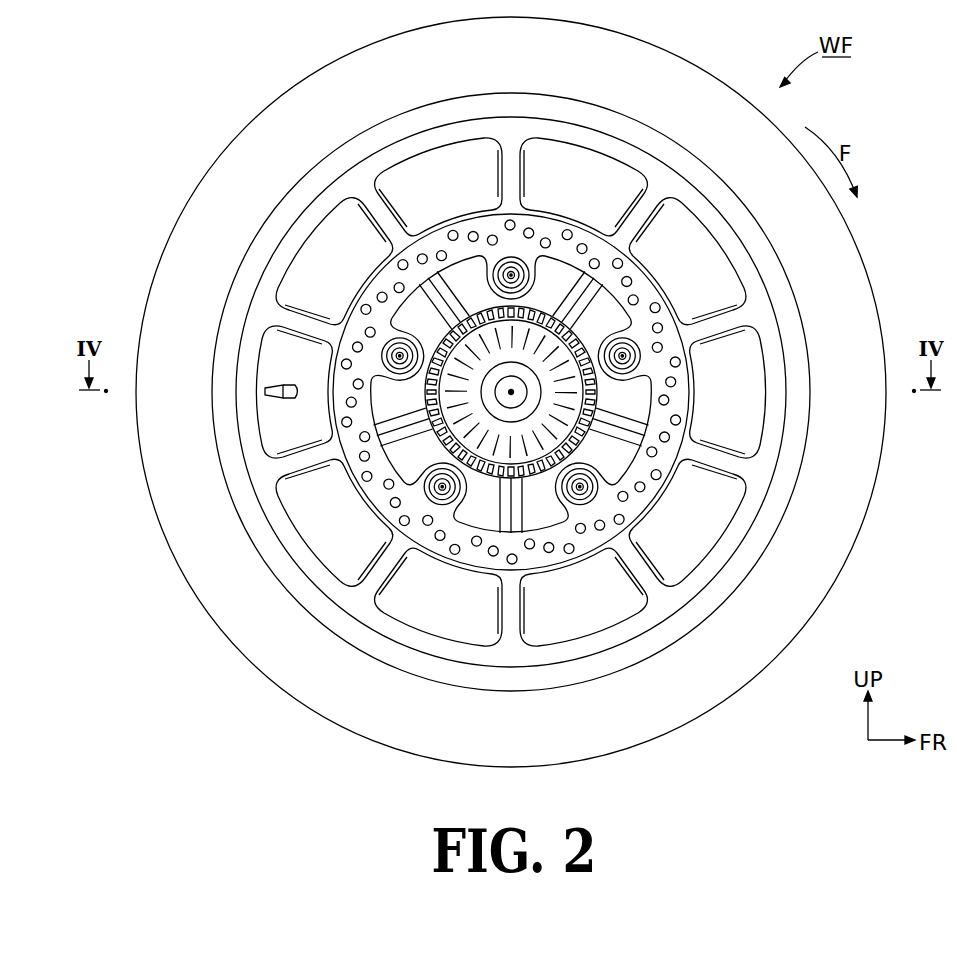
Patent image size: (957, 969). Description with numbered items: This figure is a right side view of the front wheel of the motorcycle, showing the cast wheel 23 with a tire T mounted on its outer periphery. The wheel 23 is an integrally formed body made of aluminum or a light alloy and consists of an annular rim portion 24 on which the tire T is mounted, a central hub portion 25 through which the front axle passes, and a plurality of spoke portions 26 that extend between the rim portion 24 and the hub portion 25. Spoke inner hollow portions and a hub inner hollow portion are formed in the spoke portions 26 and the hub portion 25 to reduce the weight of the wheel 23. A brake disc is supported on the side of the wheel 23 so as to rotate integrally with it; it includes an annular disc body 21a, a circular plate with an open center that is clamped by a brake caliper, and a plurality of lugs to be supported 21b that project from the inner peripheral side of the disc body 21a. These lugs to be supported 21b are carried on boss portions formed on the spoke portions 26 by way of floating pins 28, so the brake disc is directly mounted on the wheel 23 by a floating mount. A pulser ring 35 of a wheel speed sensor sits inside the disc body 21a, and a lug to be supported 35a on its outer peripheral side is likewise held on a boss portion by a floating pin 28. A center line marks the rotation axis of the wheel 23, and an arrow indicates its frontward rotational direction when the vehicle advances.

The tire T is at (862, 277).
The wheel 23 is at (320, 158).
The rim portion 24 is at (290, 200).
The hub portion 25 is at (458, 348).
The spoke portions 26 is at (503, 160).
The floating pins 28 is at (512, 259).
The disc body 21a is at (656, 506).
The lugs to be supported 21b is at (551, 262).
The pulser ring 35 is at (592, 446).
The lug to be supported 35a is at (475, 305).